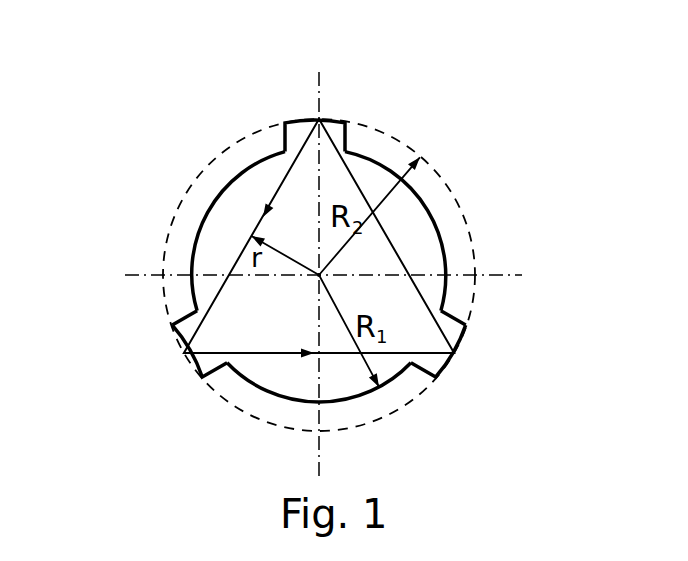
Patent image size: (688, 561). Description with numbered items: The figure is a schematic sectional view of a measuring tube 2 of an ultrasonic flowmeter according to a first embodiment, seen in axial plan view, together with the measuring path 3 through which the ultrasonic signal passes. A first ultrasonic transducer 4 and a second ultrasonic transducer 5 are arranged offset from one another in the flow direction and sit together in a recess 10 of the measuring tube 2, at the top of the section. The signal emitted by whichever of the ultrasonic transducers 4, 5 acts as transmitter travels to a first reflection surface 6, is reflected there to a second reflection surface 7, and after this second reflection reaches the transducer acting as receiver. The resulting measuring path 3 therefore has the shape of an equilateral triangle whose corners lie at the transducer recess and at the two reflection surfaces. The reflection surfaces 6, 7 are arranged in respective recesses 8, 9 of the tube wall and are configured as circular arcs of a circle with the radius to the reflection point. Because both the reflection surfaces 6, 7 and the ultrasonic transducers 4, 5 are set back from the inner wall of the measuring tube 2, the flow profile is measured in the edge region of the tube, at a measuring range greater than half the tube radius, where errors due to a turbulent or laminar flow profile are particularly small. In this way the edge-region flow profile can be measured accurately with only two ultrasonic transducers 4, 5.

The measuring tube 2 is at (240, 173).
The measuring path 3 is at (390, 245).
The first ultrasonic transducer 4 is at (316, 118).
The second ultrasonic transducer 5 is at (322, 118).
The first reflection surface 6 is at (190, 373).
The second reflection surface 7 is at (456, 351).
The recess 8 is at (180, 330).
The recess 9 is at (459, 332).
The recess 10 is at (348, 121).